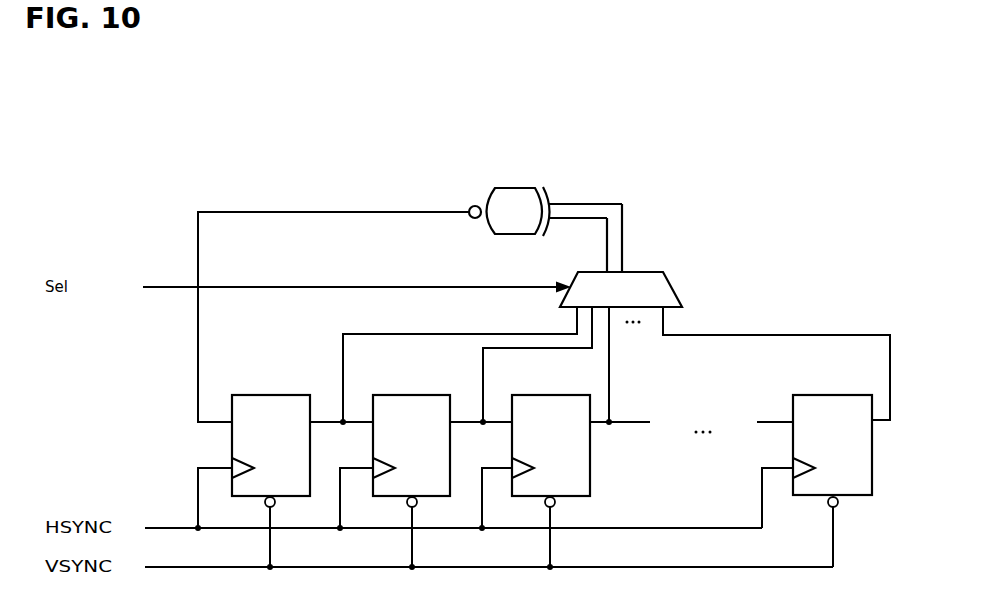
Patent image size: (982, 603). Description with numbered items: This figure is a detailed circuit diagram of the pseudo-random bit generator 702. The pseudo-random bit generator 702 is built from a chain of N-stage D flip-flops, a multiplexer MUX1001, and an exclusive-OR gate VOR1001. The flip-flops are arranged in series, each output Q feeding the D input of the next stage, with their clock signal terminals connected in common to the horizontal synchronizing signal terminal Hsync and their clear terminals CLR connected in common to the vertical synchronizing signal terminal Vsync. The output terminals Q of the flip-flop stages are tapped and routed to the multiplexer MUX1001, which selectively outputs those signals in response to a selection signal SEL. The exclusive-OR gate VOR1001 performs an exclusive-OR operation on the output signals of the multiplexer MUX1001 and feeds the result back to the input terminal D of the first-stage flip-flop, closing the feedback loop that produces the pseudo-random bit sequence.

The pseudo-random bit generator 702 is at (871, 96).
The exclusive-OR gate VOR1001 is at (518, 184).
The multiplexer MUX1001 is at (683, 290).